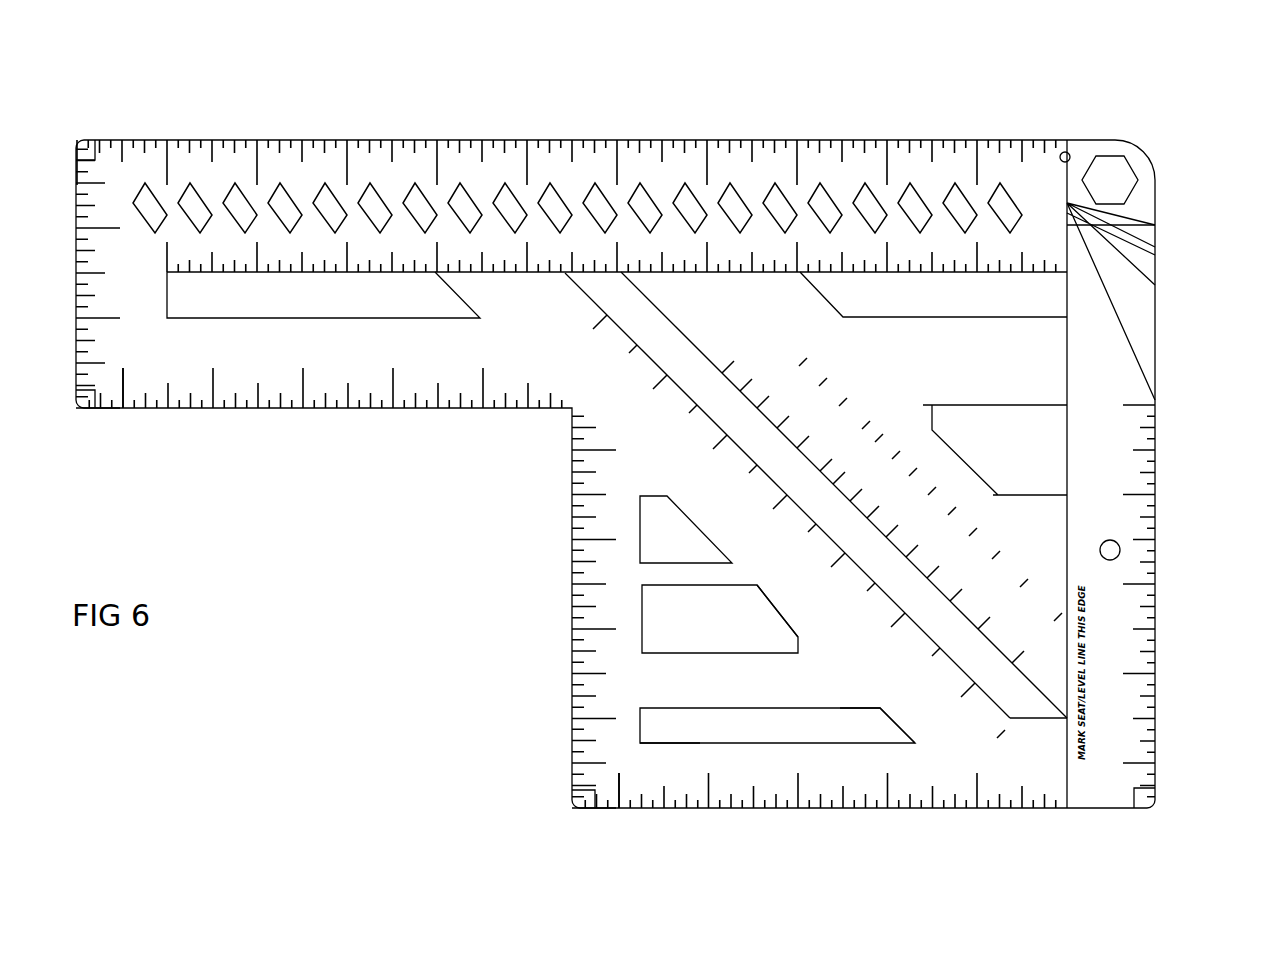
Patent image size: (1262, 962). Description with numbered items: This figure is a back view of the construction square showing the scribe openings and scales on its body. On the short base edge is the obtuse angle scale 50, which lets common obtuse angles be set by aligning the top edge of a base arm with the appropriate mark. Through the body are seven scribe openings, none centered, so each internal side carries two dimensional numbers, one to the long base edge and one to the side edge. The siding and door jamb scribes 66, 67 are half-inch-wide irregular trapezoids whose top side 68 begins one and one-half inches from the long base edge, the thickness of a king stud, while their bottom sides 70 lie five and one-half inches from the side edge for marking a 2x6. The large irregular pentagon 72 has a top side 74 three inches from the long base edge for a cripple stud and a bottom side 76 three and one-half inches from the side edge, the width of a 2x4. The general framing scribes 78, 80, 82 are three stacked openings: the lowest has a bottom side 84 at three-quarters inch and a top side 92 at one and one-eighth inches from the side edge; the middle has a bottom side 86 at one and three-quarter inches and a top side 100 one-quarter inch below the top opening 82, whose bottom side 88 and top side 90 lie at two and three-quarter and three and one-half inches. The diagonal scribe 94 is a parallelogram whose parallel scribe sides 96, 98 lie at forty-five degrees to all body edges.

The obtuse angle scale 50 is at (1118, 310).
The siding and door jamb scribe 66 is at (295, 290).
The siding and door jamb scribe 67 is at (905, 295).
The top side 68 is at (385, 286).
The bottom sides 70 is at (388, 296).
The large irregular pentagon 72 is at (1040, 455).
The top side 74 is at (978, 408).
The bottom side 76 is at (1048, 490).
The general framing scribe 78 is at (668, 727).
The general framing scribe 80 is at (663, 637).
The top opening 82 is at (662, 538).
The bottom side 84 is at (866, 735).
The bottom side 86 is at (703, 660).
The bottom side 88 is at (658, 565).
The top side 90 is at (653, 497).
The top side 92 is at (712, 710).
The diagonal scribe 94 is at (670, 350).
The parallel scribe side 96 is at (698, 350).
The parallel scribe side 98 is at (593, 305).
The top side of the middle opening 100 is at (717, 597).